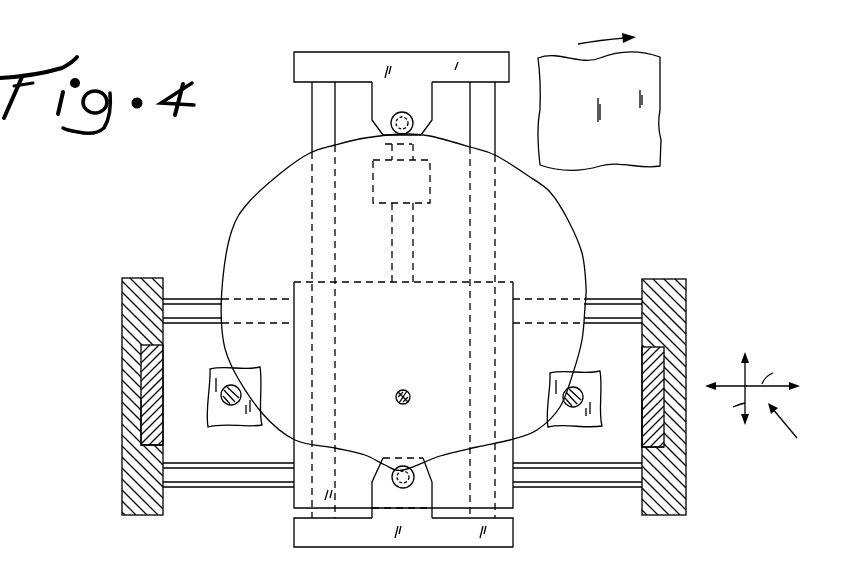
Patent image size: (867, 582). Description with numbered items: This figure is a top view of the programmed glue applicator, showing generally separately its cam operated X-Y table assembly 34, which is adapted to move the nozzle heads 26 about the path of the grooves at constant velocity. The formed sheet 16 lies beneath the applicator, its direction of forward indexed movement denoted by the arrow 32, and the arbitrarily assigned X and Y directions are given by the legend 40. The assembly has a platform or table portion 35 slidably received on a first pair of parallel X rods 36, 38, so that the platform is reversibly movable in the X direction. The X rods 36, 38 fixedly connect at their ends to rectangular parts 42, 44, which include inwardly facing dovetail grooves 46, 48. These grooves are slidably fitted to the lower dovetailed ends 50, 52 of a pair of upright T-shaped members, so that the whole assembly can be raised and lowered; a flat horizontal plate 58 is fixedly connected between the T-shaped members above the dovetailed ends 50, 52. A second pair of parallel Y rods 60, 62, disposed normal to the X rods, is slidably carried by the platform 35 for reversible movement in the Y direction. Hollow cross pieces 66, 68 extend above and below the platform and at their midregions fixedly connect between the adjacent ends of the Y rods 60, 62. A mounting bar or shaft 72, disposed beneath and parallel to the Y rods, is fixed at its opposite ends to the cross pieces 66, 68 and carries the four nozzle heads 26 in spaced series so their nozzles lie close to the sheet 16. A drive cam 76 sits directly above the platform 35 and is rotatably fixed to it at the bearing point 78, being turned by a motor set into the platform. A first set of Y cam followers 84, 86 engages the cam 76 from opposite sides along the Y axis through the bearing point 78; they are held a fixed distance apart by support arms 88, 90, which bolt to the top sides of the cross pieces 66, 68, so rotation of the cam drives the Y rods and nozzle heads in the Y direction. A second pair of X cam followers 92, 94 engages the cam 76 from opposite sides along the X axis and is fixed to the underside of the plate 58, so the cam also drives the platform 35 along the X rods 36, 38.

The sheet 16 is at (645, 137).
The nozzle heads 26 is at (383, 193).
The arrow 32 is at (584, 39).
The X-Y table assembly 34 is at (220, 226).
The platform 35 is at (460, 480).
The X rod 36 is at (257, 477).
The X rod 38 is at (186, 308).
The legend 40 is at (764, 416).
The rectangular part 42 is at (133, 492).
The rectangular part 44 is at (680, 505).
The dovetail groove 46 is at (142, 377).
The dovetail groove 48 is at (663, 348).
The dovetailed end 50 is at (147, 410).
The dovetailed end 52 is at (660, 427).
The plate 58 is at (242, 418).
The Y rod 60 is at (320, 118).
The Y rod 62 is at (485, 126).
The cross piece 66 is at (462, 538).
The cross piece 68 is at (450, 68).
The mounting bar 72 is at (410, 251).
The drive cam 76 is at (407, 334).
The bearing point 78 is at (408, 387).
The Y cam follower 84 is at (406, 467).
The Y cam follower 86 is at (391, 124).
The support arm 88 is at (393, 538).
The support arm 90 is at (390, 68).
The X cam follower 92 is at (232, 417).
The X cam follower 94 is at (567, 423).